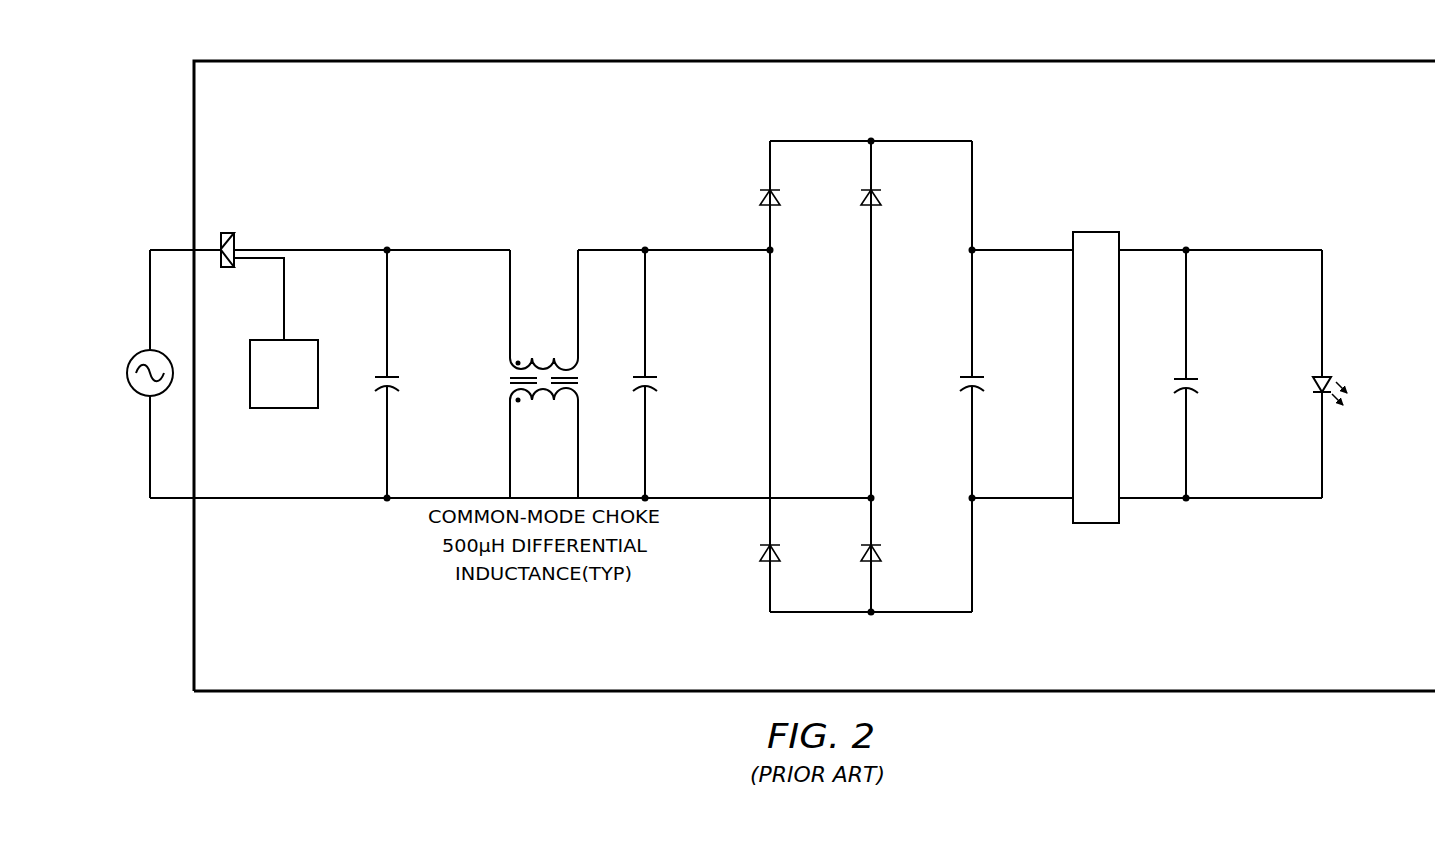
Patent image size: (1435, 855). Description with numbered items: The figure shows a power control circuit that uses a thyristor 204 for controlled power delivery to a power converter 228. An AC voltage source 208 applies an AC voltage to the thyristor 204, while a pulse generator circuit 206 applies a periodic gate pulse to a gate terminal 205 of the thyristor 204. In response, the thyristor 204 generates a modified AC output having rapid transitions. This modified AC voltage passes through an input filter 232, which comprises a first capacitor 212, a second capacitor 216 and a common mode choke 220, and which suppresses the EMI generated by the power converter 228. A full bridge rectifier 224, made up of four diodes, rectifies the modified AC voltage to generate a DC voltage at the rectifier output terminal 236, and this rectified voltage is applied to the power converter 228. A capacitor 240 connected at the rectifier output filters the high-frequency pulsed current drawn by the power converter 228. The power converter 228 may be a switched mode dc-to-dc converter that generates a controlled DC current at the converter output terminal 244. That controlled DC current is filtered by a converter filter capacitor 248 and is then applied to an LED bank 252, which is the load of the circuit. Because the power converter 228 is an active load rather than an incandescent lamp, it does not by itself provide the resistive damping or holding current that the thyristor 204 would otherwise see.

The thyristor 204 is at (233, 232).
The gate terminal 205 is at (283, 311).
The pulse generator circuit 206 is at (304, 388).
The AC voltage source 208 is at (135, 352).
The capacitor 212 is at (380, 372).
The capacitor 216 is at (640, 373).
The common mode choke 220 is at (536, 398).
The full bridge rectifier 224 is at (818, 614).
The power converter 228 is at (1096, 231).
The input filter 232 is at (539, 317).
The rectifier output terminal 236 is at (927, 141).
The capacitor 240 is at (966, 373).
The converter output terminal 244 is at (1190, 249).
The converter filter capacitor 248 is at (1180, 376).
The LED bank 252 is at (1314, 377).